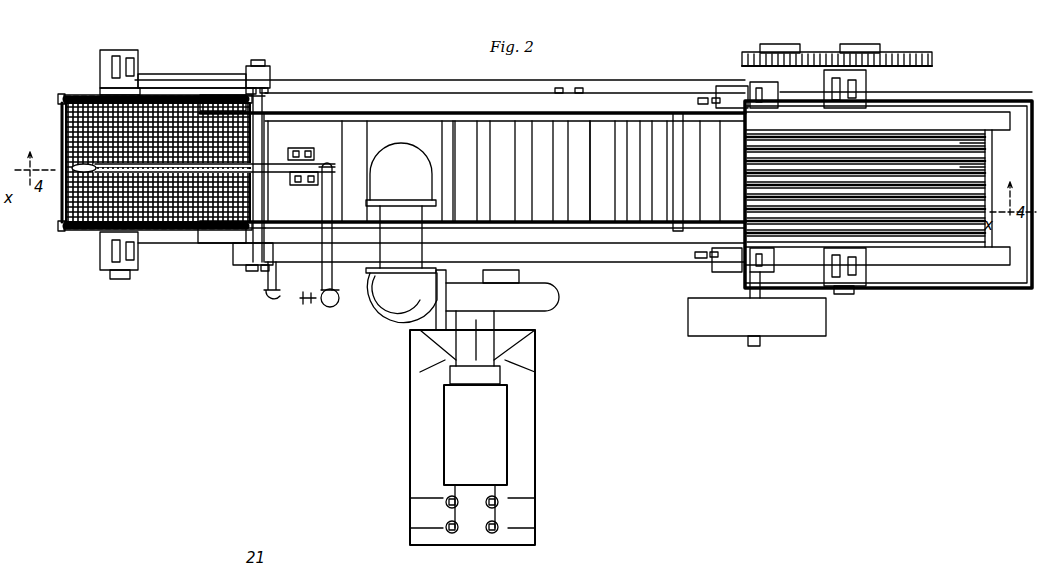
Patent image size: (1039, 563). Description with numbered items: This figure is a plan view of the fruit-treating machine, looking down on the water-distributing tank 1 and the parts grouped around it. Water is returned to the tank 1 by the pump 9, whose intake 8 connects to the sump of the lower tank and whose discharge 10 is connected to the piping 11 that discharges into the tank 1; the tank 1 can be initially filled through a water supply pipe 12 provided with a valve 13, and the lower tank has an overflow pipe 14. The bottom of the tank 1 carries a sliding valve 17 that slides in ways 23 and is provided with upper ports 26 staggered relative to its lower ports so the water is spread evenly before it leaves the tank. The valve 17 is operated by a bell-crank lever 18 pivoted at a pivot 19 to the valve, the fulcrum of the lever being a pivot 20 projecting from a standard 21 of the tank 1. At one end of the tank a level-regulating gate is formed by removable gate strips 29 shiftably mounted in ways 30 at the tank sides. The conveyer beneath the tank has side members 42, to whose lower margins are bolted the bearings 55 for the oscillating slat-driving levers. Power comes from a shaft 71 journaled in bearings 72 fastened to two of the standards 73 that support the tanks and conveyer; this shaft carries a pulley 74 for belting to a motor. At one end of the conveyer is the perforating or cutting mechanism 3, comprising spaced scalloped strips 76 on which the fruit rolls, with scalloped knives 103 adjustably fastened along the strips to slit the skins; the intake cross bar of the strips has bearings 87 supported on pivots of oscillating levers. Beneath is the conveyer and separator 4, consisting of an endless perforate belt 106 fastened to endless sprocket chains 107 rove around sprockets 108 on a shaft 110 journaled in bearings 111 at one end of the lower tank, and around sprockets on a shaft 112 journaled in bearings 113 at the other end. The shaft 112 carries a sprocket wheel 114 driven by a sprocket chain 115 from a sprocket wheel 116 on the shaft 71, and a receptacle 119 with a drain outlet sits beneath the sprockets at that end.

The water-distributing tank 1 is at (400, 128).
The perforating, puncturing, cutting or slitting mechanism 3 is at (824, 148).
The conveyer and separator 4 is at (160, 90).
The intake 8 is at (500, 280).
The pump 9 is at (548, 314).
The discharge 10 is at (400, 336).
The piping 11 is at (385, 295).
The water supply pipe 12 is at (333, 282).
The valve 13 is at (305, 300).
The overflow pipe 14 is at (266, 298).
The sliding valve 17 is at (350, 130).
The bell-crank lever 18 is at (205, 240).
The pivot 19 is at (300, 148).
The pivot 20 is at (280, 90).
The standard 21 is at (245, 262).
The ways 23 is at (578, 122).
The upper ports 26 is at (452, 130).
The gate strips 29 is at (648, 128).
The ways 30 is at (676, 238).
The side members 42 is at (215, 244).
The bearings 55 is at (705, 260).
The shaft 71 is at (756, 346).
The bearings 72 is at (776, 272).
The standards 73 is at (728, 272).
The pulley 74 is at (732, 322).
The strips 76 is at (975, 152).
The bearings 87 is at (975, 246).
The knives 103 is at (972, 178).
The endless perforate belt 106 is at (62, 112).
The endless sprocket chains 107 is at (90, 232).
The sprockets 108 is at (58, 228).
The shaft 110 is at (120, 280).
The bearings 111 is at (107, 270).
The shaft 112 is at (848, 296).
The bearings 113 is at (866, 276).
The sprocket wheel 114 is at (932, 58).
The sprocket chain 115 is at (920, 66).
The sprocket wheel 116 is at (789, 42).
The receptacle 119 is at (945, 284).